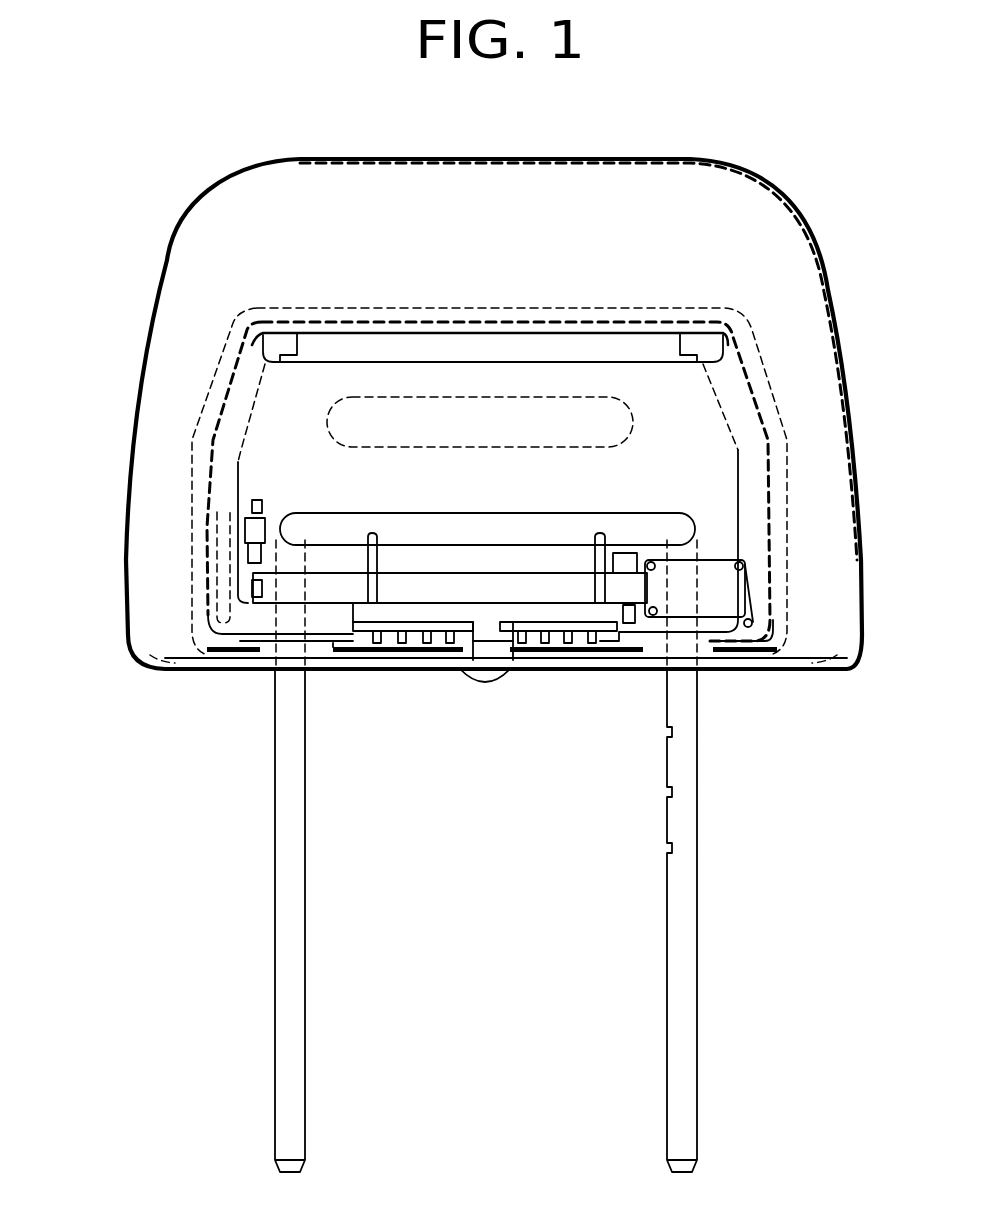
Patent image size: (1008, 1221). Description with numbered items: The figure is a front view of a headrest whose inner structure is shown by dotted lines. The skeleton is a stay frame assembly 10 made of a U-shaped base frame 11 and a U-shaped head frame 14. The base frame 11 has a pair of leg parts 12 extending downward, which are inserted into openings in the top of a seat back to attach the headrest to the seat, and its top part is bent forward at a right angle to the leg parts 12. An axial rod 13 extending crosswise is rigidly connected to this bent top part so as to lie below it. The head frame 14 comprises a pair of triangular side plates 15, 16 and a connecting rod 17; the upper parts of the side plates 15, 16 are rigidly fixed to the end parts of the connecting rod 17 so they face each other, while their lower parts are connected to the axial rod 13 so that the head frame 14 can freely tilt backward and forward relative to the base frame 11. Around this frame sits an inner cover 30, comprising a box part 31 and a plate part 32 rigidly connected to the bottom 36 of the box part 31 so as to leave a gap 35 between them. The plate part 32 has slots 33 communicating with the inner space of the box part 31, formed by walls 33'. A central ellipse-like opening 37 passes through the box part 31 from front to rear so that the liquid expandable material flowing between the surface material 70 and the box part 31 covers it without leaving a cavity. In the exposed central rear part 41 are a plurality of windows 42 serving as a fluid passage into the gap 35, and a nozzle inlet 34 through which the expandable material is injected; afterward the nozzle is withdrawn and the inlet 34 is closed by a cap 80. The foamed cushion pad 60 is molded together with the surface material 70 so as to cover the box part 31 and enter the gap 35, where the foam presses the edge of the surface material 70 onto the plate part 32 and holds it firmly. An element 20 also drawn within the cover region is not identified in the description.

The stay frame assembly 10 is at (718, 806).
The base frame 11 is at (718, 767).
The leg parts 12 is at (298, 932).
The axial rod 13 is at (410, 598).
The head frame 14 is at (651, 380).
The left side plate 15 is at (242, 393).
The right side plate 16 is at (767, 470).
The connecting rod 17 is at (498, 353).
The adjusting mechanism 20 is at (280, 471).
The inner cover 30 is at (222, 305).
The box part 31 is at (197, 425).
The plate part 32 is at (447, 658).
The slots 33 is at (506, 722).
The walls 33' is at (491, 706).
The liquid expandable material injecting nozzle inlet 34 is at (490, 655).
The gap 35 is at (187, 645).
The bottom 36 is at (232, 660).
The opening 37 is at (560, 410).
The central rear part 41 is at (372, 616).
The windows 42 is at (533, 652).
The foamed cushion pad 60 is at (823, 397).
The surface material 70 is at (837, 318).
The cap 80 is at (485, 680).